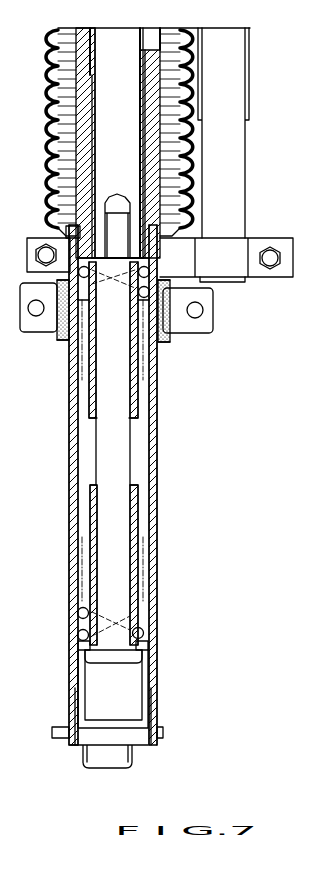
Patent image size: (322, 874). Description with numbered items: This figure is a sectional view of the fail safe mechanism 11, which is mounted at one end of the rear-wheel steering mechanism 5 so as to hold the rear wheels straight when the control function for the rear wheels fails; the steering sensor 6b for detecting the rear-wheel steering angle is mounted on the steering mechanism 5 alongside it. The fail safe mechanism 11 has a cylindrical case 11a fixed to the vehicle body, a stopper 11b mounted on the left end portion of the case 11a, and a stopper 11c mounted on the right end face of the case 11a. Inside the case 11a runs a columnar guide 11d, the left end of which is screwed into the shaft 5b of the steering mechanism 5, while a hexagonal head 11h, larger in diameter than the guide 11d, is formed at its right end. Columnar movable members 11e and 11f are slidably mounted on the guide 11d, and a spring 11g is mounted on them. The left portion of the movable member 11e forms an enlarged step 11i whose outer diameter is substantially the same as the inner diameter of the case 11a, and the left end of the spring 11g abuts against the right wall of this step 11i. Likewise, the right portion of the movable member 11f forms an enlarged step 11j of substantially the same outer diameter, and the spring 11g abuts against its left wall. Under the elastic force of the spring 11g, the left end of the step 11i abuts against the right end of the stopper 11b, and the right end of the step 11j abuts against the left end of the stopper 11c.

The steering mechanism 5 is at (43, 83).
The shaft of the steering mechanism 5b is at (105, 173).
The steering sensor 6b is at (262, 152).
The fail safe mechanism 11 is at (66, 378).
The cylindrical case 11a is at (157, 467).
The stopper 11b is at (50, 131).
The stopper 11c is at (137, 742).
The columnar guide 11d is at (98, 454).
The columnar movable member 11e is at (130, 409).
The columnar movable member 11f is at (137, 515).
The spring 11g is at (155, 333).
The hexagonal head 11h is at (87, 662).
The step 11i is at (70, 232).
The step 11j is at (78, 645).